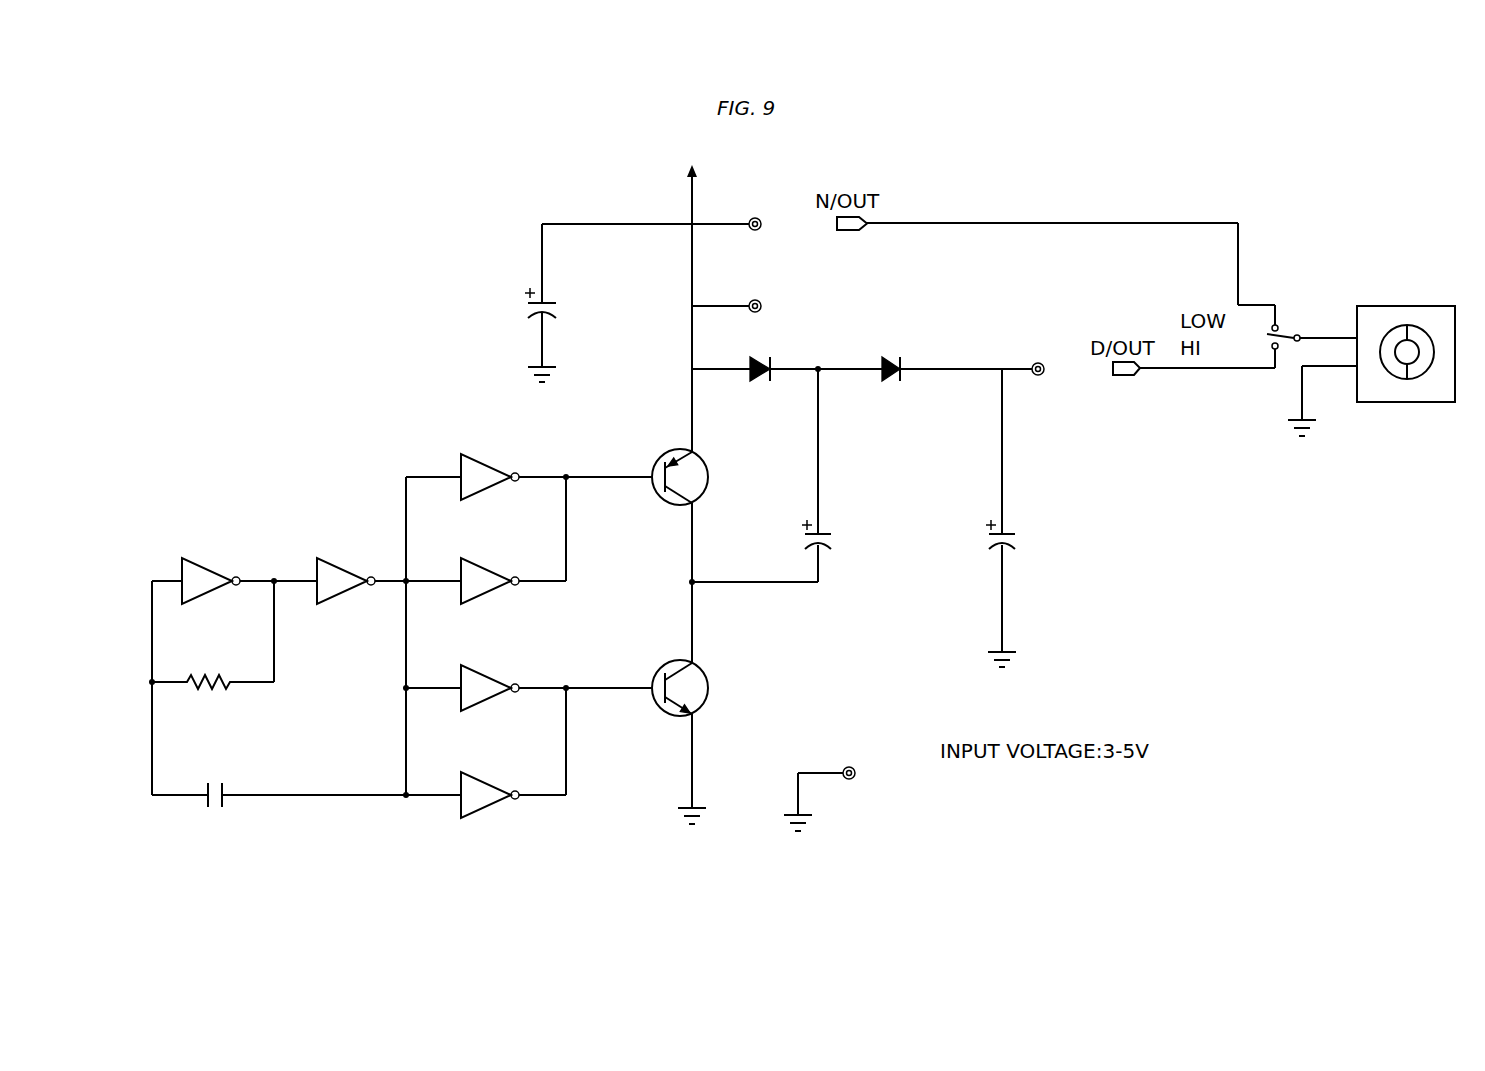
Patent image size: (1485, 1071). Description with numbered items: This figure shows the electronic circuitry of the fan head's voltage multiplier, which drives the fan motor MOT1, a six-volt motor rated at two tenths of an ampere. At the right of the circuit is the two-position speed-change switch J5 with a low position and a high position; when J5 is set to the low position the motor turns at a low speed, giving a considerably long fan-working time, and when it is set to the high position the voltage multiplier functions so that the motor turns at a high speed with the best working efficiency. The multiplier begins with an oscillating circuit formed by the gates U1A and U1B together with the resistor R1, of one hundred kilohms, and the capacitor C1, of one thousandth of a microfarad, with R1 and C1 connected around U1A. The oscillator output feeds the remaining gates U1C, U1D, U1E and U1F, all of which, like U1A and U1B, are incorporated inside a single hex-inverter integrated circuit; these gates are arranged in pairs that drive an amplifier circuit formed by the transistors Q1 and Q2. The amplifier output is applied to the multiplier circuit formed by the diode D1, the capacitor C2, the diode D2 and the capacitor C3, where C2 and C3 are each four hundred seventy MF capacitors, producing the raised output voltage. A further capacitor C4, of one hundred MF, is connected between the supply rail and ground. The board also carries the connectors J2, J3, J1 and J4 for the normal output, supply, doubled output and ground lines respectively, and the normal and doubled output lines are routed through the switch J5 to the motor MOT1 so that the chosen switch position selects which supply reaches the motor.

The NAND gate U1A is at (210, 579).
The NAND gate U1B is at (343, 579).
The NAND gate U1C is at (486, 475).
The NAND gate U1D is at (486, 580).
The NAND gate U1E is at (490, 686).
The NAND gate U1F is at (490, 792).
The resistor R1 is at (213, 693).
The capacitor C1 is at (279, 808).
The capacitor C2 is at (880, 475).
The capacitor C3 is at (1065, 518).
The capacitor C4 is at (604, 303).
The diode D1 is at (759, 370).
The diode D2 is at (889, 370).
The transistor Q1 is at (689, 690).
The transistor Q2 is at (721, 476).
The D/OUT connector J1 is at (1034, 344).
The N/OUT connector J2 is at (662, 198).
The VCC connector J3 is at (733, 281).
The GND connector J4 is at (826, 770).
The two-position speed-change switch J5 is at (1281, 313).
The motor 6V/0.2A MOT1 is at (1388, 342).